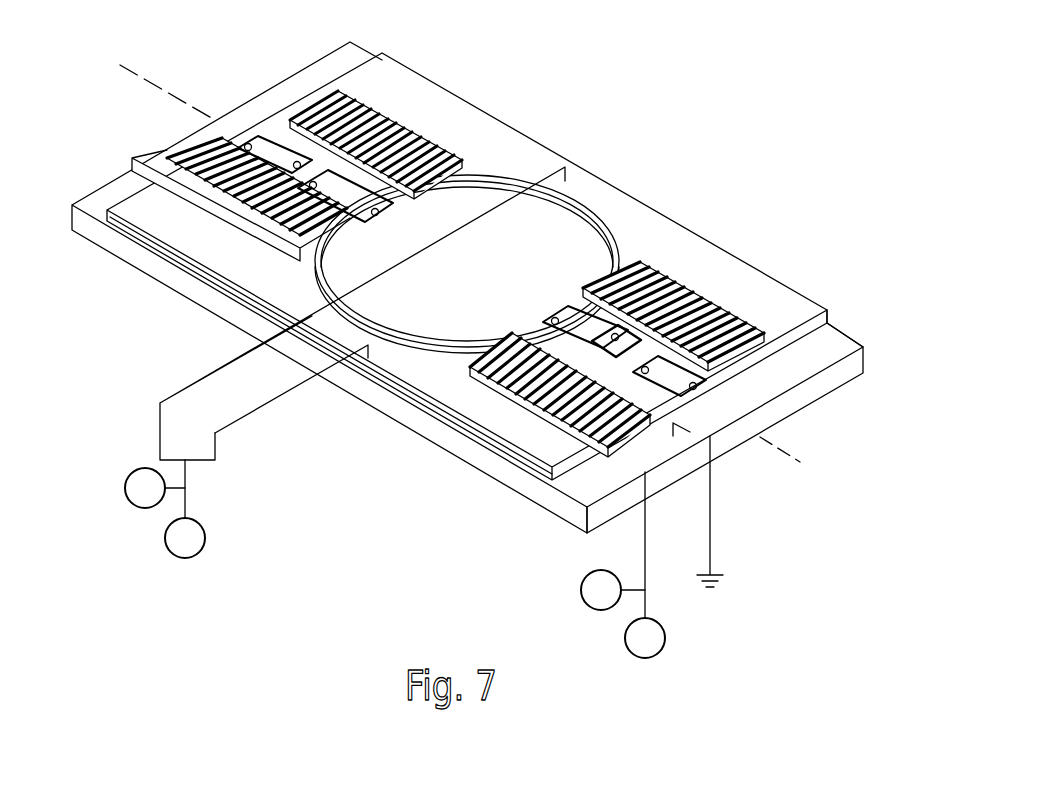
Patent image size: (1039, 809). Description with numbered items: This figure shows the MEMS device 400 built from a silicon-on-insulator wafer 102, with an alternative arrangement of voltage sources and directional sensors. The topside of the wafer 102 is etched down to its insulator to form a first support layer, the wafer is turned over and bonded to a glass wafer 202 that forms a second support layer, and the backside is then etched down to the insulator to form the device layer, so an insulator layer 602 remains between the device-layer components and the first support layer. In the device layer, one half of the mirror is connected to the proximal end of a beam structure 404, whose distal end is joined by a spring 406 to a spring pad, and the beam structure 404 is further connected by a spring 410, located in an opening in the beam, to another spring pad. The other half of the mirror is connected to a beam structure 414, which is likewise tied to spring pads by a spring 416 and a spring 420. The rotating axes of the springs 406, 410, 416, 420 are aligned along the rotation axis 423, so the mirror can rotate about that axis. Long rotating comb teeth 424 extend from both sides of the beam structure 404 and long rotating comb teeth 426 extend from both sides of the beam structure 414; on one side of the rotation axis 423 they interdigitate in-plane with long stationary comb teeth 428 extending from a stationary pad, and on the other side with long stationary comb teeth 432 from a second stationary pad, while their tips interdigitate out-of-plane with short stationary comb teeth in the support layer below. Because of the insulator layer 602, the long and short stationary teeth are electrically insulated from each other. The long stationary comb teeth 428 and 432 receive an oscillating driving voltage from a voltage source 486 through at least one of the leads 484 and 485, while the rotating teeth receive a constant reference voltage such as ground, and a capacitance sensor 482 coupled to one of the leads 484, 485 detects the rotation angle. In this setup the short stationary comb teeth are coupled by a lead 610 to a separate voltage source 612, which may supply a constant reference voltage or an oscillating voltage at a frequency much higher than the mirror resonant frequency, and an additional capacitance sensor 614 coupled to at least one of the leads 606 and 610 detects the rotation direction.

The MEMS device 400 is at (784, 97).
The SOI wafer 102 is at (829, 307).
The glass wafer 202 is at (843, 370).
The beam structure 404 is at (642, 338).
The spring 406 is at (680, 385).
The spring 410 is at (592, 335).
The beam structure 414 is at (320, 177).
The spring 416 is at (270, 133).
The spring 420 is at (340, 300).
The rotation axis 423 is at (797, 465).
The long rotating comb teeth 424 is at (703, 313).
The long rotating comb teeth 426 is at (213, 155).
The long stationary comb teeth 428 is at (445, 337).
The long stationary comb teeth 432 is at (660, 290).
The capacitance sensor 482 is at (130, 476).
The lead 484 is at (180, 395).
The lead 485 is at (237, 427).
The voltage source 486 is at (205, 540).
The insulator layer 602 is at (143, 245).
The lead 606 is at (585, 510).
The lead 610 is at (808, 356).
The voltage source 612 is at (665, 640).
The capacitance sensor 614 is at (582, 588).